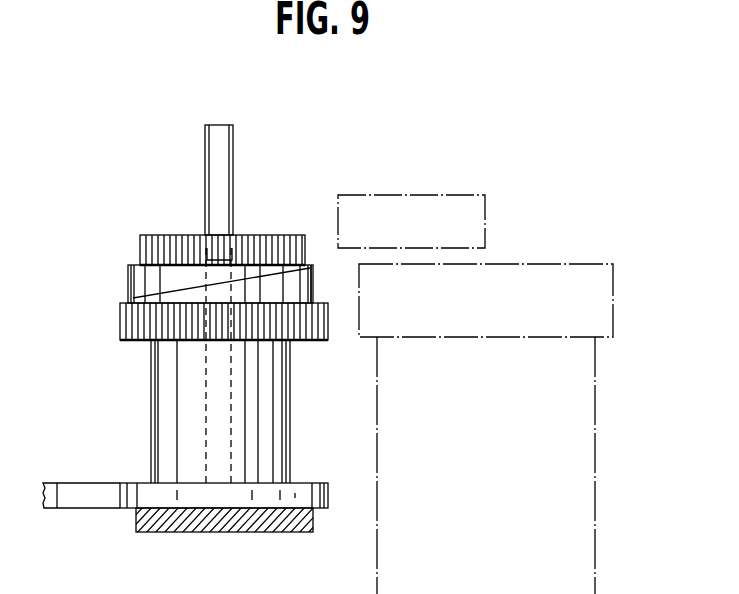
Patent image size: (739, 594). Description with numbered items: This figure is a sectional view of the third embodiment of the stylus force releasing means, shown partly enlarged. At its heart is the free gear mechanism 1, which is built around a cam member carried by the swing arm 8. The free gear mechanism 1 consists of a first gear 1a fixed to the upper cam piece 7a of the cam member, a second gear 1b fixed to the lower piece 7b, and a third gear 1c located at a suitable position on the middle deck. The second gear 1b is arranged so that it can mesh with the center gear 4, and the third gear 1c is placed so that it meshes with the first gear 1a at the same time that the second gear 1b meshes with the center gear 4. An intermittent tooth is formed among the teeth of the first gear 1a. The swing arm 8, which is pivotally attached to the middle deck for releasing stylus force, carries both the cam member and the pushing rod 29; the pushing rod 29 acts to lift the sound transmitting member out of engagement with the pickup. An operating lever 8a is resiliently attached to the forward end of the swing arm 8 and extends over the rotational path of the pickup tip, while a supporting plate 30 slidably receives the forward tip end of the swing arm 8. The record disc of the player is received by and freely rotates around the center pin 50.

The free gear mechanism 1 is at (243, 72).
The first gear 1a is at (180, 235).
The second gear 1b is at (120, 320).
The third gear 1c is at (343, 195).
The center gear 4 is at (535, 265).
The upper cam piece 7a is at (135, 295).
The lower piece 7b is at (313, 292).
The swing arm 8 is at (328, 483).
The operating lever 8a is at (86, 493).
The pushing rod 29 is at (233, 182).
The supporting plate 30 is at (137, 517).
The center pin 50 is at (232, 428).